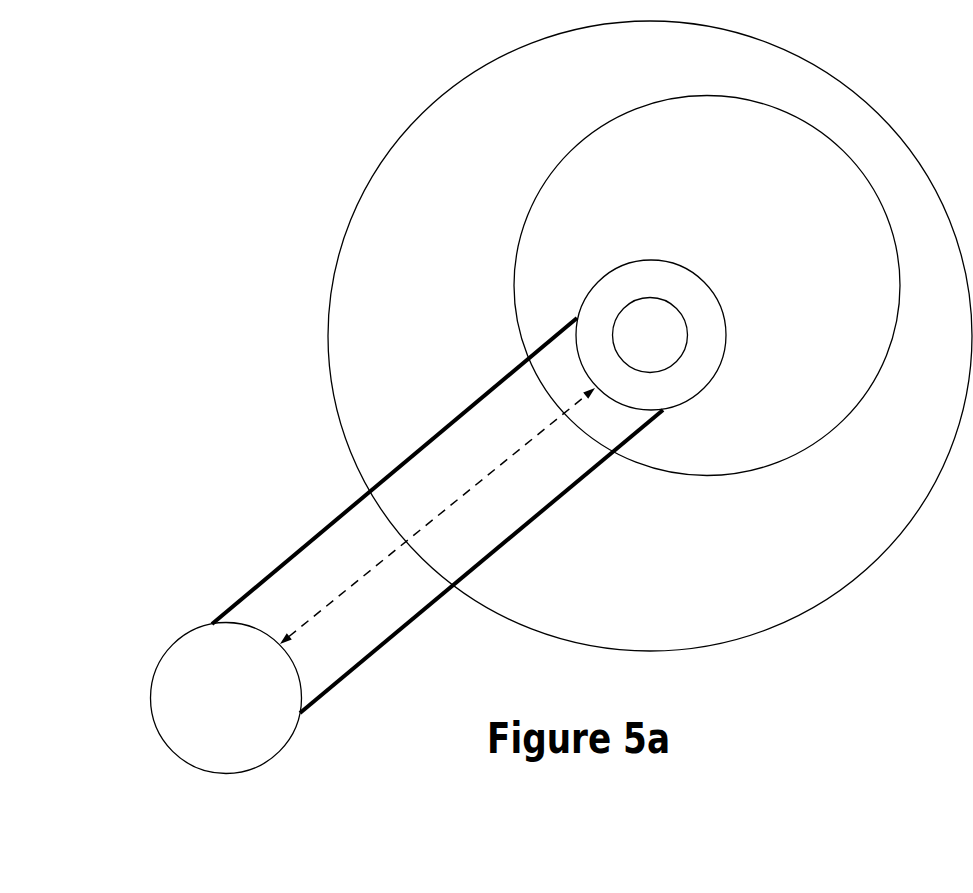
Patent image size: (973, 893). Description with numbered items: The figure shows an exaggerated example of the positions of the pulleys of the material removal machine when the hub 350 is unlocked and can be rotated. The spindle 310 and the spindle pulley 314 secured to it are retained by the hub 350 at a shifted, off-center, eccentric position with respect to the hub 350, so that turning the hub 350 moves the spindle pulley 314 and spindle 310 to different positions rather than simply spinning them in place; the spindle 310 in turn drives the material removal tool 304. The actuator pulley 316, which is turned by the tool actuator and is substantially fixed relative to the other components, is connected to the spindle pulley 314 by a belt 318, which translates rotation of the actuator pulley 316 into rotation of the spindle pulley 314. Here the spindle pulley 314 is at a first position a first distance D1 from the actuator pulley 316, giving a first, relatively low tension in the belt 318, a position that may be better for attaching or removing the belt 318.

The material removal tool 304 is at (327, 337).
The hub 350 is at (553, 170).
The spindle pulley 314 is at (650, 260).
The spindle 310 is at (677, 308).
The actuator pulley 316 is at (150, 698).
The belt 318 is at (288, 558).
The first distance D1 is at (437, 516).